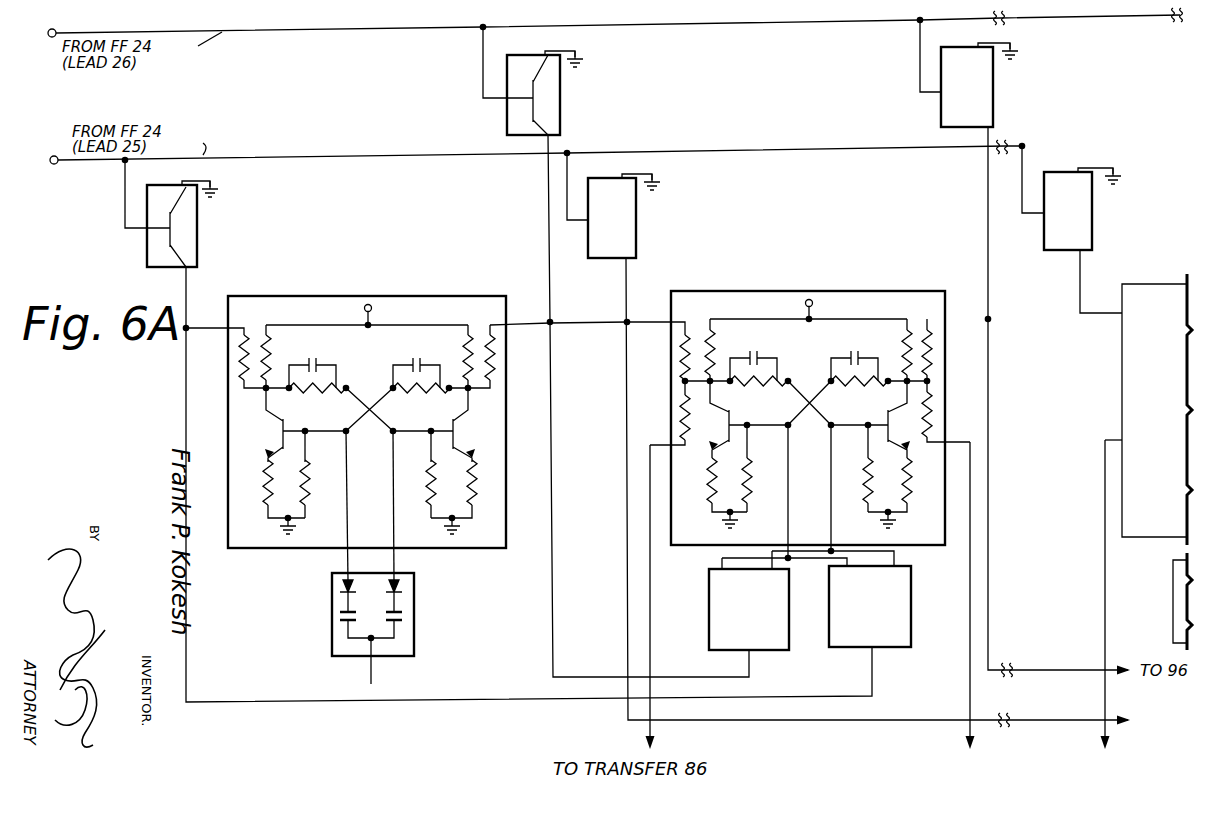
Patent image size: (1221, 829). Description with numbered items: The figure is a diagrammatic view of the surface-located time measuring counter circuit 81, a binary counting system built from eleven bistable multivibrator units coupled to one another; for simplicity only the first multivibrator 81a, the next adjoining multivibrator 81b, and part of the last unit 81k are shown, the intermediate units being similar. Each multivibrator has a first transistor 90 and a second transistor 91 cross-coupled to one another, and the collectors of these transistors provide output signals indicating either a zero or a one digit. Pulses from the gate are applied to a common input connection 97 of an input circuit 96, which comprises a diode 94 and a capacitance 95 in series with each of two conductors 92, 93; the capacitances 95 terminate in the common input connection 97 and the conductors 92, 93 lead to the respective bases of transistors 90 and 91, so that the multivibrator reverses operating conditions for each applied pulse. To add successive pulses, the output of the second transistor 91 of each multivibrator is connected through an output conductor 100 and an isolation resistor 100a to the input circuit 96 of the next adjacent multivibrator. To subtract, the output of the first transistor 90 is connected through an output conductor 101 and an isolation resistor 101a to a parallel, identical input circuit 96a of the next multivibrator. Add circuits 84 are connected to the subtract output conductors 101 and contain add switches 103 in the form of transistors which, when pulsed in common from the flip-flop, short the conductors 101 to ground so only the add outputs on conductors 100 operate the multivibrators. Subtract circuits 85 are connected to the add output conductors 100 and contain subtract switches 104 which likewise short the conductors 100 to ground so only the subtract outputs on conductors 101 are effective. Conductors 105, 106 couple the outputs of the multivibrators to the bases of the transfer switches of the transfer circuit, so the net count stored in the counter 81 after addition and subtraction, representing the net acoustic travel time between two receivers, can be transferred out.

The counter circuit 81 is at (333, 272).
The first multivibrator 81a is at (415, 296).
The next adjoining multivibrator 81b is at (898, 289).
The last multivibrator unit 81k is at (1156, 284).
The add circuit 84 is at (200, 218).
The subtract circuit 85 is at (477, 82).
The first transistor 90 is at (287, 425).
The second transistor 91 is at (449, 424).
The conductor 92 is at (347, 462).
The conductor 93 is at (394, 522).
The diode 94 is at (333, 586).
The capacitance 95 is at (333, 615).
The input circuit 96 is at (333, 643).
The input circuit 96a is at (912, 608).
The common input connection 97 is at (371, 683).
The output conductor 100 is at (552, 392).
The isolation resistor 100a is at (507, 347).
The output conductor 101 is at (186, 387).
The isolation resistor 101a is at (242, 365).
The add switch 103 is at (198, 240).
The subtract switch 104 is at (561, 95).
The conductor 105 is at (647, 735).
The conductor 106 is at (966, 732).